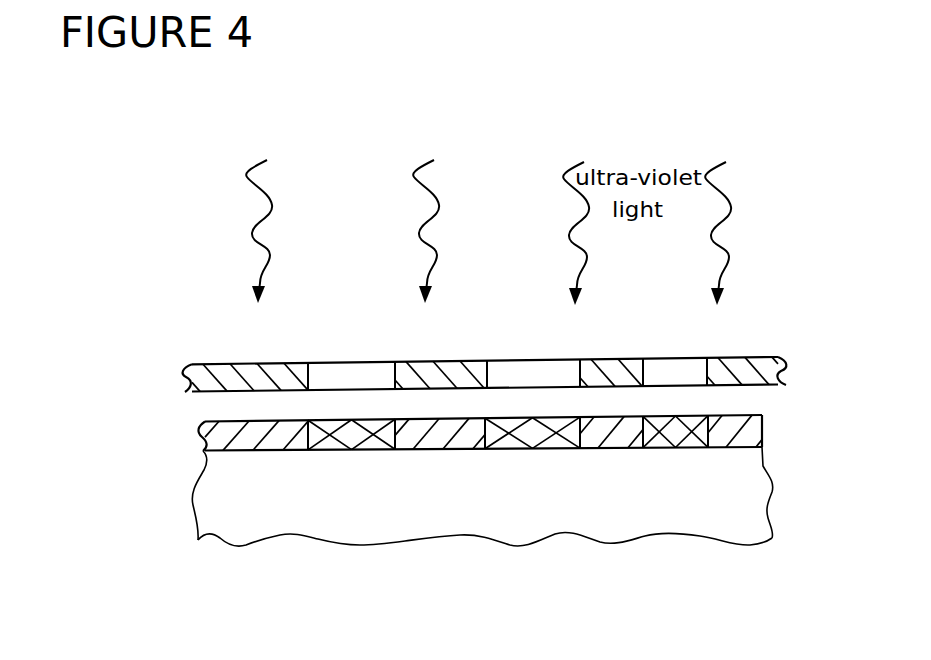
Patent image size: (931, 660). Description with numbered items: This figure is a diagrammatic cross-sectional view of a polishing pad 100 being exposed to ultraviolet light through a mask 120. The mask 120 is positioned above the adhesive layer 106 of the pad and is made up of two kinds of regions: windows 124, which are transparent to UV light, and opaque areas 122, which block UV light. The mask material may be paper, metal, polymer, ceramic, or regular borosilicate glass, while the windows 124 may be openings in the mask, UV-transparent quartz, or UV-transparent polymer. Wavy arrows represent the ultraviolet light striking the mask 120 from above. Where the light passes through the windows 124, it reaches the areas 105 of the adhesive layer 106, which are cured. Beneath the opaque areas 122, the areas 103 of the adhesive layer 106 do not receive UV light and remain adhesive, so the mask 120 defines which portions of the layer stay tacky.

The substrate 100 is at (168, 508).
The unexposed areas 103 is at (249, 444).
The exposed areas 105 is at (352, 446).
The adhesive layer 106 is at (756, 430).
The mask 120 is at (167, 367).
The opaque areas 122 is at (217, 382).
The windows 124 is at (345, 375).